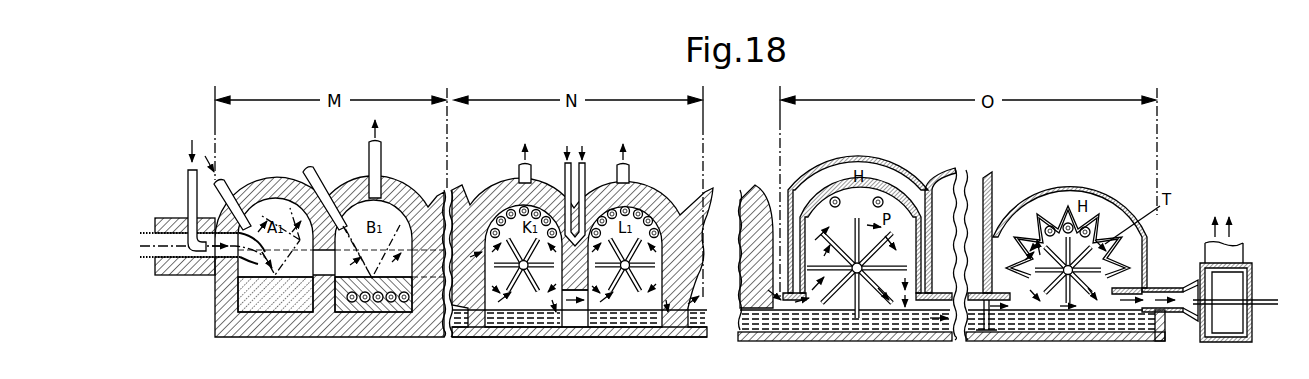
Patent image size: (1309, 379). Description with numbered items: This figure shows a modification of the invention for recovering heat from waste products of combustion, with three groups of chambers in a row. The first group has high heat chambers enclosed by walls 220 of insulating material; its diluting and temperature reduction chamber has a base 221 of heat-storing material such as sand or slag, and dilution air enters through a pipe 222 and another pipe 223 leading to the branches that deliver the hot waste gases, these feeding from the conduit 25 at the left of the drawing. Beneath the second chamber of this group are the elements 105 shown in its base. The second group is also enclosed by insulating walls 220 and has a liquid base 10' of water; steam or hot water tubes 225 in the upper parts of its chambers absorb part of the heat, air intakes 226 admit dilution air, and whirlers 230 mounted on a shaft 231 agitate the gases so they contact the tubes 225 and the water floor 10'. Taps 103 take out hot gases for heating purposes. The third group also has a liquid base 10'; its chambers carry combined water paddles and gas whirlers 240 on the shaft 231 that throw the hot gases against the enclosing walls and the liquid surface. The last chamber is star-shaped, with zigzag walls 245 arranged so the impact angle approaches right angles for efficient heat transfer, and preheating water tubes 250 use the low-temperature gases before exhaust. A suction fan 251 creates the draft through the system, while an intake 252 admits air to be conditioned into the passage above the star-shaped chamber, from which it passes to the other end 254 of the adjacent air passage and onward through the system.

The walls of insulating material 220 is at (268, 178).
The base 221 is at (230, 338).
The pipe 222 is at (222, 182).
The pipe 223 is at (186, 182).
The supply conduit 25 is at (133, 245).
The taps 103 is at (381, 152).
The heating elements 105 is at (390, 302).
The steam or hot water tubes 225 is at (537, 203).
The air intakes 226 is at (584, 164).
The liquid base 10' is at (803, 337).
The whirlers 230 is at (613, 292).
The shaft 231 is at (579, 353).
The combined water paddles and gas whirlers 240 is at (833, 297).
The preheating water tubes 250 is at (881, 197).
The walls of star-shaped enclosing wall 245 is at (1047, 228).
The suction fan 251 is at (1252, 284).
The intake 252 is at (968, 282).
The other end of adjacent air passage 254 is at (989, 275).